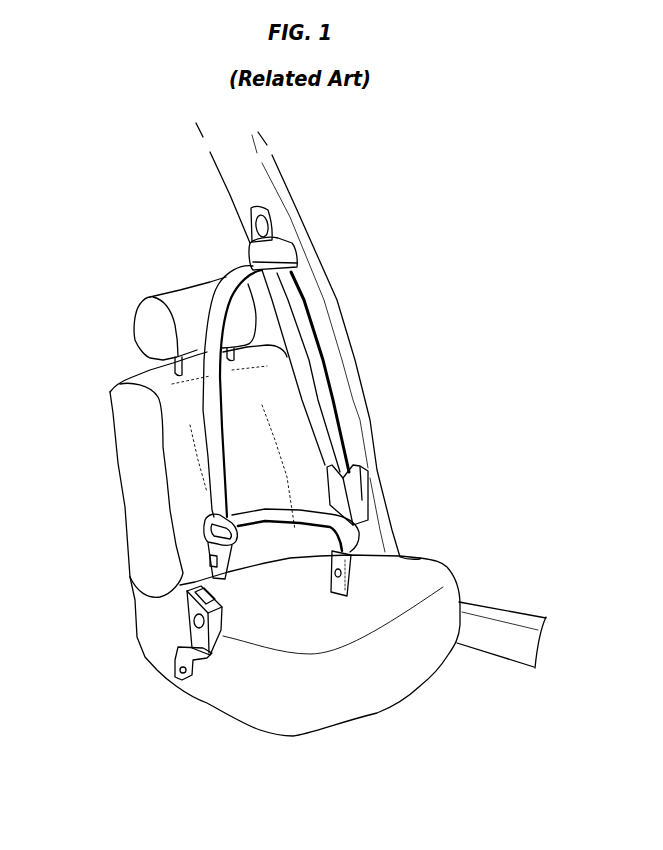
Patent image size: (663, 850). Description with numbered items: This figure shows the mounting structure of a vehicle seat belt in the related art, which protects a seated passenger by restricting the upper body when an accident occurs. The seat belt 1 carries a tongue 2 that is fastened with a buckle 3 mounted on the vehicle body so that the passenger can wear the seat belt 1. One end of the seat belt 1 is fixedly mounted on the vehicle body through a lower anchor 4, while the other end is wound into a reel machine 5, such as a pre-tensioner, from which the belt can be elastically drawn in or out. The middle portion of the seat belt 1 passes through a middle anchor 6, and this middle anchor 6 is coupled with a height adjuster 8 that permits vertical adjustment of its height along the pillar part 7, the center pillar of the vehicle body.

The seat belt 1 is at (325, 398).
The tongue 2 is at (212, 550).
The buckle 3 is at (188, 617).
The lower anchor 4 is at (352, 590).
The reel machine 5 is at (357, 490).
The middle anchor 6 is at (283, 252).
The pillar part 7 is at (325, 320).
The height adjuster 8 is at (264, 228).